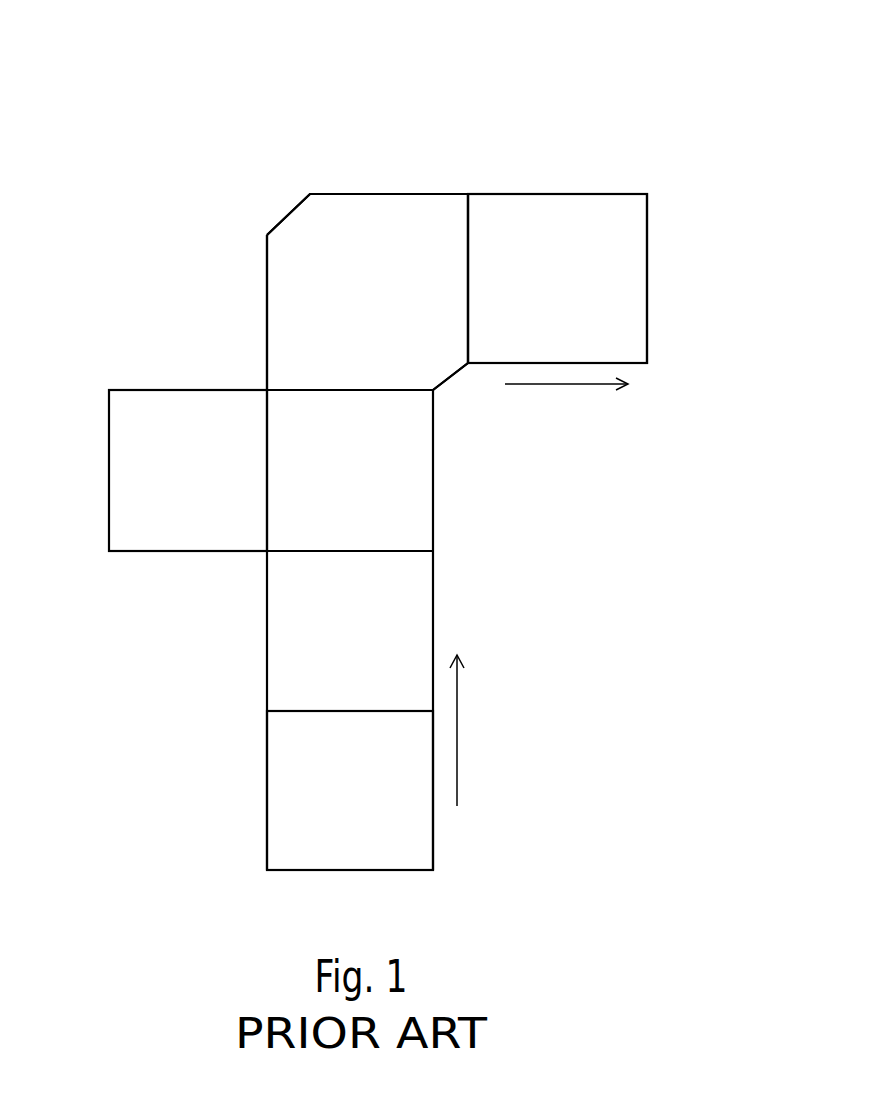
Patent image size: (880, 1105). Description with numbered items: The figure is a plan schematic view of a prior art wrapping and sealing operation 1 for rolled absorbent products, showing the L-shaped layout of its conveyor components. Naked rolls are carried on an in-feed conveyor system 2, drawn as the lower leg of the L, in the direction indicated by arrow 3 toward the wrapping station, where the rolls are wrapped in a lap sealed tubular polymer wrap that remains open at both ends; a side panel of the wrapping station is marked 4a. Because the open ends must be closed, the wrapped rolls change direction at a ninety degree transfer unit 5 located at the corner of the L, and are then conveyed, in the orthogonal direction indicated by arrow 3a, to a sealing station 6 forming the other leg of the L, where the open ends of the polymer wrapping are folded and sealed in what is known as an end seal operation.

The wrapping and sealing operation 1 is at (742, 150).
The in-feed conveyor system 2 is at (283, 782).
The arrow 3 is at (460, 735).
The second folding direction 3a is at (577, 387).
The side panel 4a is at (188, 533).
The 90° transfer unit 5 is at (383, 218).
The sealing station 6 is at (562, 208).